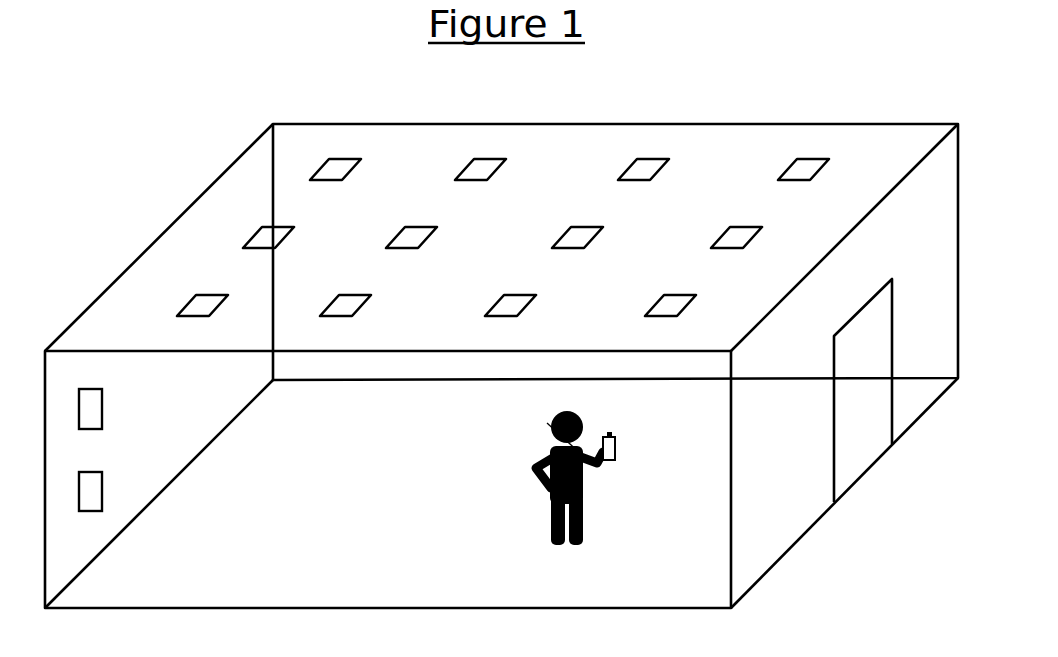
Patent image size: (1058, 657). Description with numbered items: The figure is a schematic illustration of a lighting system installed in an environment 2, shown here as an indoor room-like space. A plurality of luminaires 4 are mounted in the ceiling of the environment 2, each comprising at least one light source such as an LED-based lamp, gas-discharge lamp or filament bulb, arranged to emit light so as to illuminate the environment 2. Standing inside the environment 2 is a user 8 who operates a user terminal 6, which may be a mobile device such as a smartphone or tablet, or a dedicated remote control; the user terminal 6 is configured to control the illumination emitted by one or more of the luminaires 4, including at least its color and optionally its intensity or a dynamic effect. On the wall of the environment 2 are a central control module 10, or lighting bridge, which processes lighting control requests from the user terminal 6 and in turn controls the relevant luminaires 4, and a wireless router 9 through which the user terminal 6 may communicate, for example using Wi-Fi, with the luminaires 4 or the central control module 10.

The environment 2 is at (782, 124).
The luminaire 4 is at (655, 164).
The user terminal 6 is at (616, 449).
The user 8 is at (553, 498).
The wireless router 9 is at (102, 480).
The central control module 10 is at (102, 400).